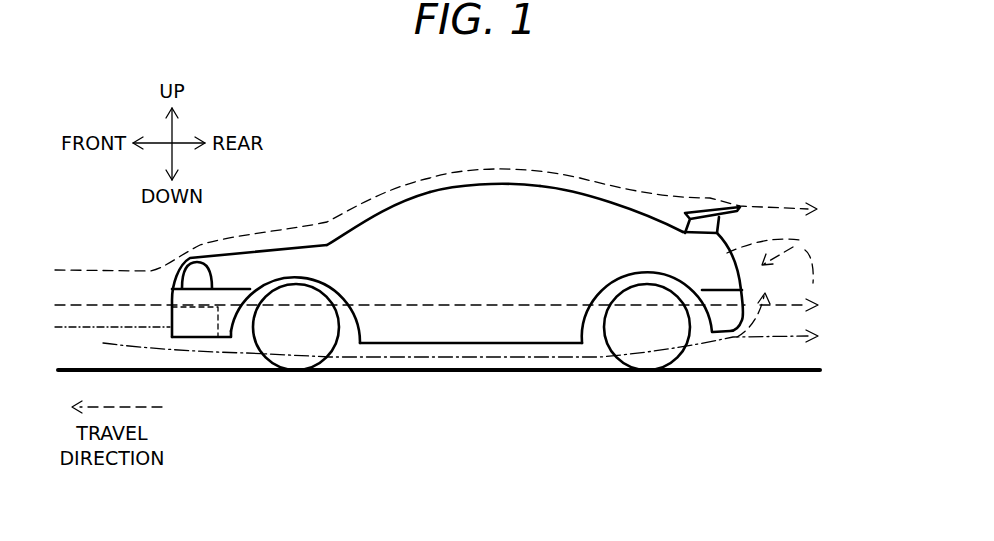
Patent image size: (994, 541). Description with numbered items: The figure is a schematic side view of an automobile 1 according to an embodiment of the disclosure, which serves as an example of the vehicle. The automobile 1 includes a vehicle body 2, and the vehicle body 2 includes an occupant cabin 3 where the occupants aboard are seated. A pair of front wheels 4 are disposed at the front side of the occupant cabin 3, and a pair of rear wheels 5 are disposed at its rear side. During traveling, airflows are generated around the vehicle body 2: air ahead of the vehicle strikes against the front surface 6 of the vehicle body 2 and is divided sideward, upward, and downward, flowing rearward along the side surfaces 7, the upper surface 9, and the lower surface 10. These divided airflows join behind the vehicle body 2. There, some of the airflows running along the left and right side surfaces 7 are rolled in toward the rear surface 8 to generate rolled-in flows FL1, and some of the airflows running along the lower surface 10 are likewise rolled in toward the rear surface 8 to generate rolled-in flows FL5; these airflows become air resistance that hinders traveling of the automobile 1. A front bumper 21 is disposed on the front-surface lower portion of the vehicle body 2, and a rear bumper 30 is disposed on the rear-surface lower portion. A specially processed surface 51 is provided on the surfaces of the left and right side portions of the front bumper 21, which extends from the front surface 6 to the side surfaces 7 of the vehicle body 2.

The automobile 1 is at (594, 150).
The vehicle body 2 is at (495, 185).
The occupant cabin 3 is at (403, 213).
The front wheels 4 is at (295, 336).
The rear wheels 5 is at (642, 335).
The front surface 6 is at (160, 326).
The side surfaces 7 is at (473, 323).
The rear surface 8 is at (774, 248).
The upper surface 9 is at (563, 190).
The lower surface 10 is at (398, 344).
The front bumper 21 is at (225, 332).
The rear bumper 30 is at (747, 292).
The specially processed surface 51 is at (186, 328).
The rolled-in flows FL1 is at (814, 262).
The rolled-in flows FL5 is at (760, 340).